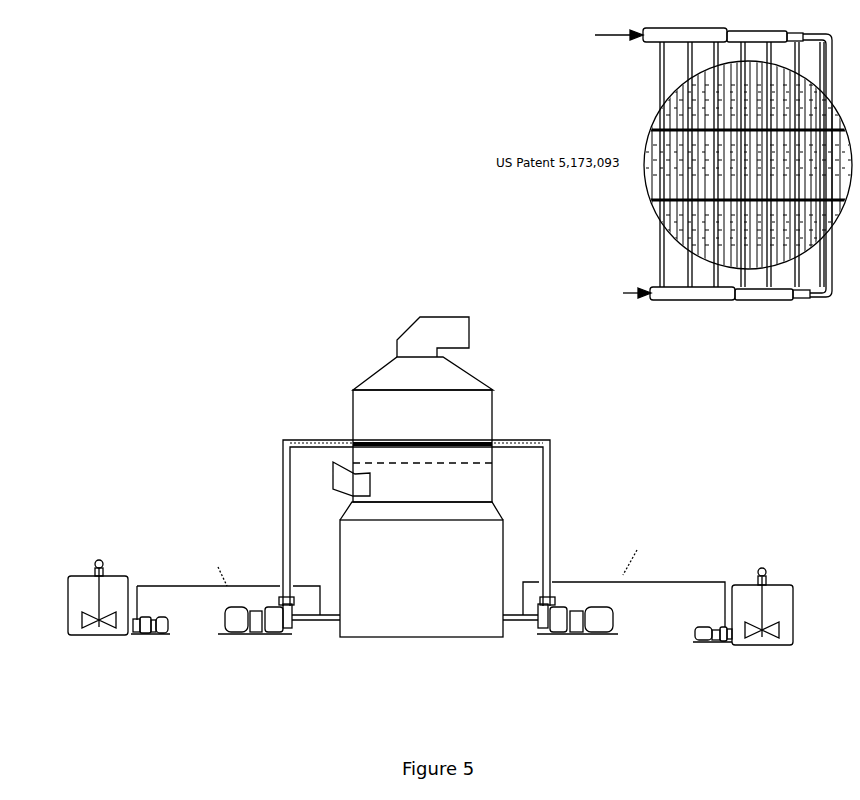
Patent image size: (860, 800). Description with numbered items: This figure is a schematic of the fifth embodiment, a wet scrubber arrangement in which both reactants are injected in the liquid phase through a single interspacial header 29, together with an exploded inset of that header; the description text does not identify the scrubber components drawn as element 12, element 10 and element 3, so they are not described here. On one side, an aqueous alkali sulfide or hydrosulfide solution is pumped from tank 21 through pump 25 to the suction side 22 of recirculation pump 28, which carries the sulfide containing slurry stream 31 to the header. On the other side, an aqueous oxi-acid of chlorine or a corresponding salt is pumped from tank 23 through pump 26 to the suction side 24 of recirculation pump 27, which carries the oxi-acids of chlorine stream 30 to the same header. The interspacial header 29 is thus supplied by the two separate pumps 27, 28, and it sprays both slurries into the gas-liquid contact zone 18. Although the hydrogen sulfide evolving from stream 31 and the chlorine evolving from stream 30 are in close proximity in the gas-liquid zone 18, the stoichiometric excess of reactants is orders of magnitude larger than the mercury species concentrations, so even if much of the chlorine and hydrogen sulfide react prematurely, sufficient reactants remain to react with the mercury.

The tank 3 is at (421, 569).
The exhaust duct 10 is at (454, 328).
The scrubber hood 12 is at (417, 395).
The gas-liquid contact zone 18 is at (422, 463).
The tank 21 is at (68, 598).
The suction side 22 is at (317, 621).
The tank 23 is at (793, 610).
The suction side 24 is at (526, 621).
The pump 25 is at (138, 634).
The pump 26 is at (700, 642).
The recirculation pump 27 is at (578, 637).
The recirculation pump 28 is at (259, 632).
The interspacial header 29 is at (490, 438).
The oxi-acids of chlorine stream 30 is at (518, 442).
The sulfide containing slurry stream 31 is at (348, 439).